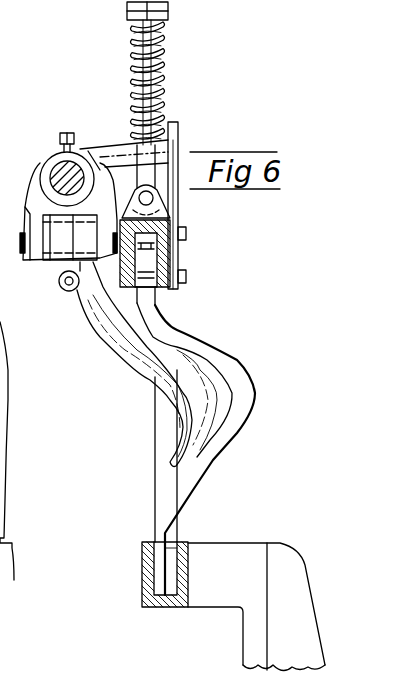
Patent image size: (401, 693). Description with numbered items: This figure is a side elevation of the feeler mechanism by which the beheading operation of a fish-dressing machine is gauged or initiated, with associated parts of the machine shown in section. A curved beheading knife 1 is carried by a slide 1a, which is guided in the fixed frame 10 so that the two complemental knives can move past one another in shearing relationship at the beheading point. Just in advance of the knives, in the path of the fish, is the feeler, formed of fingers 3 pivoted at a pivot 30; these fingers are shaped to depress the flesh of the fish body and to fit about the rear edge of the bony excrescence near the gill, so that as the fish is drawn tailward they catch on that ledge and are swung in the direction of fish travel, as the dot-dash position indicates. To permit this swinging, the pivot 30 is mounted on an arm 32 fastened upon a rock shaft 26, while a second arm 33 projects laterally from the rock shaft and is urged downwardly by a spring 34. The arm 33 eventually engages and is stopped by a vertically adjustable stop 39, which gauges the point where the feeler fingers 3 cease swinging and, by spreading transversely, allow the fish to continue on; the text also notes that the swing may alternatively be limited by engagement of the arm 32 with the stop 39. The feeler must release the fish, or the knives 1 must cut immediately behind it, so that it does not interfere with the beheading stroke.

The beheading knife 1 is at (240, 364).
The slide 1a is at (172, 548).
The feeler finger 3 is at (122, 364).
The fixed frame 10 is at (163, 257).
The rock shaft 26 is at (60, 170).
The pivot 30 is at (23, 257).
The arm 32 is at (24, 198).
The second arm 33 is at (100, 145).
The spring 34 is at (160, 82).
The vertically adjustable stop 39 is at (178, 132).